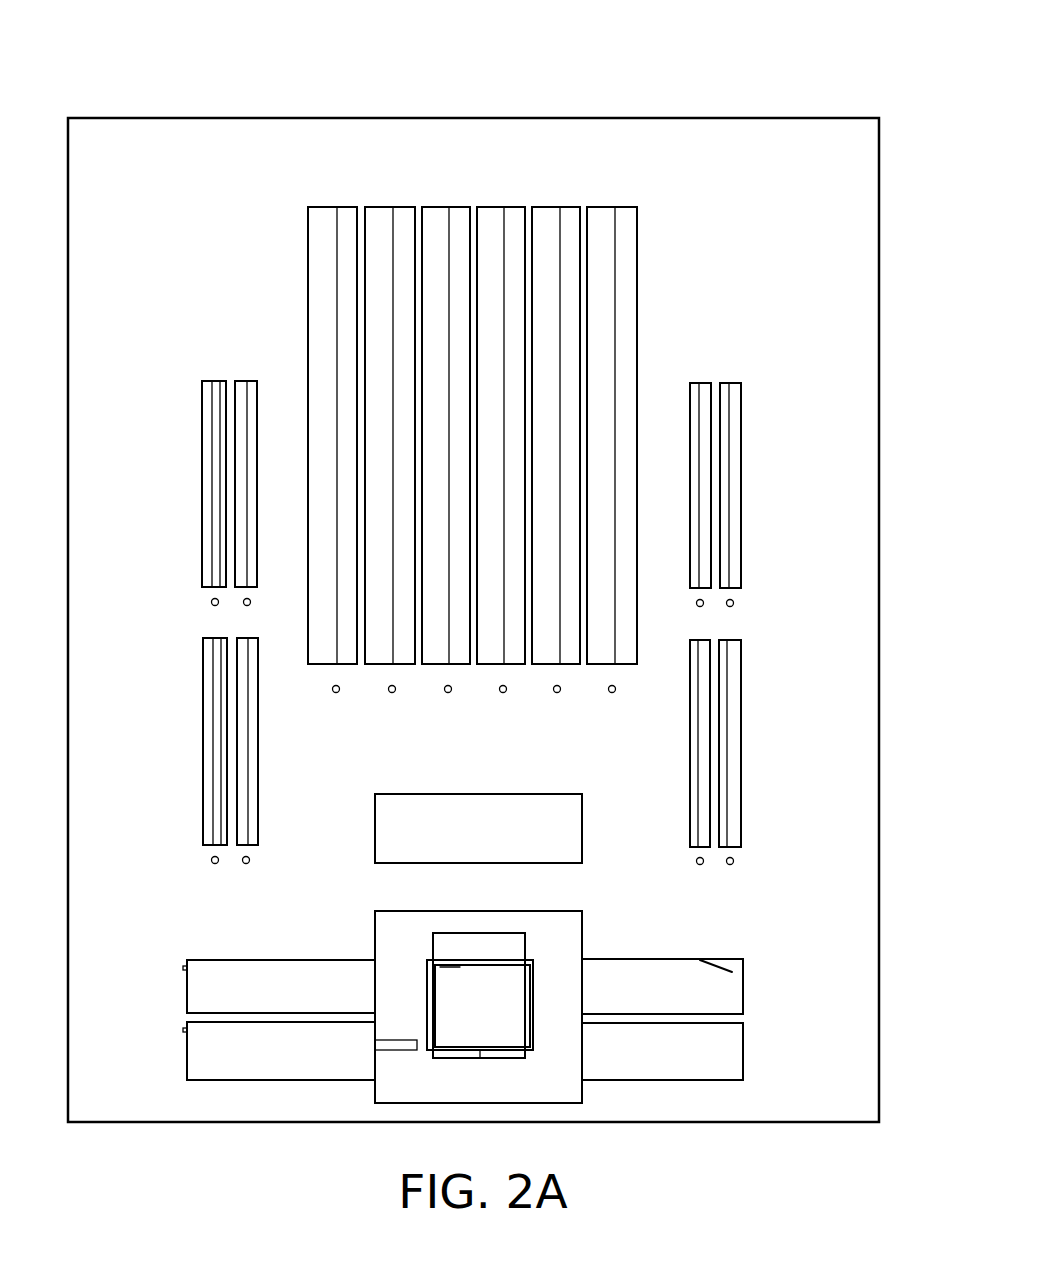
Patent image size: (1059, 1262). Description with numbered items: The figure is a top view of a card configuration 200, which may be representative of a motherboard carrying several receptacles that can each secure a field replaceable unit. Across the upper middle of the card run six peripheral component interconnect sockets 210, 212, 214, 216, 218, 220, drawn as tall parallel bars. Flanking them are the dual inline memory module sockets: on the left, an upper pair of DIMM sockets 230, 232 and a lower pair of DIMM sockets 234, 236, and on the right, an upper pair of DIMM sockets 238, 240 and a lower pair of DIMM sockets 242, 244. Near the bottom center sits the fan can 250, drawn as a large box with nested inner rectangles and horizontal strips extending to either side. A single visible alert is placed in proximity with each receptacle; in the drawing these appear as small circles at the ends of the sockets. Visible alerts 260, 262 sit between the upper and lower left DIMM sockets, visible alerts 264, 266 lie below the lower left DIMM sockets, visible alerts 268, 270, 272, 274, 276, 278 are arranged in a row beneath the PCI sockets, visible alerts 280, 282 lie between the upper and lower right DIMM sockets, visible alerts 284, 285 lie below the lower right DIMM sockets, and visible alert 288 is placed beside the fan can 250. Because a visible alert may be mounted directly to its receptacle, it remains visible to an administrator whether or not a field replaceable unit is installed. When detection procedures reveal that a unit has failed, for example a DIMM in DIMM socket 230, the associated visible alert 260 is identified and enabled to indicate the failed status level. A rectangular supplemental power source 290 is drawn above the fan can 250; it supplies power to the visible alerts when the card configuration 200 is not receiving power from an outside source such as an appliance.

The card configuration 200 is at (606, 72).
The peripheral component interconnect (PCI) socket 210 is at (337, 206).
The peripheral component interconnect (PCI) socket 212 is at (393, 207).
The peripheral component interconnect (PCI) socket 214 is at (449, 206).
The peripheral component interconnect (PCI) socket 216 is at (504, 207).
The peripheral component interconnect (PCI) socket 218 is at (560, 206).
The peripheral component interconnect (PCI) socket 220 is at (615, 207).
The dual inline memory module (DIMM) socket 230 is at (203, 381).
The dual inline memory module (DIMM) socket 232 is at (247, 381).
The dual inline memory module (DIMM) socket 234 is at (203, 842).
The dual inline memory module (DIMM) socket 236 is at (258, 845).
The dual inline memory module (DIMM) socket 238 is at (690, 383).
The dual inline memory module (DIMM) socket 240 is at (733, 383).
The dual inline memory module (DIMM) socket 242 is at (690, 846).
The dual inline memory module (DIMM) socket 244 is at (741, 847).
The fan can 250 is at (567, 911).
The visible alert 260 is at (212, 600).
The visible alert 262 is at (250, 600).
The visible alert 264 is at (215, 864).
The visible alert 266 is at (247, 864).
The visible alert 268 is at (336, 693).
The visible alert 270 is at (392, 693).
The visible alert 272 is at (448, 693).
The visible alert 274 is at (503, 693).
The visible alert 276 is at (557, 693).
The visible alert 278 is at (612, 693).
The visible alert 280 is at (697, 601).
The visible alert 282 is at (733, 601).
The visible alert 284 is at (700, 865).
The visible alert 285 is at (731, 865).
The visible alert 288 is at (355, 928).
The supplemental power source 290 is at (583, 830).